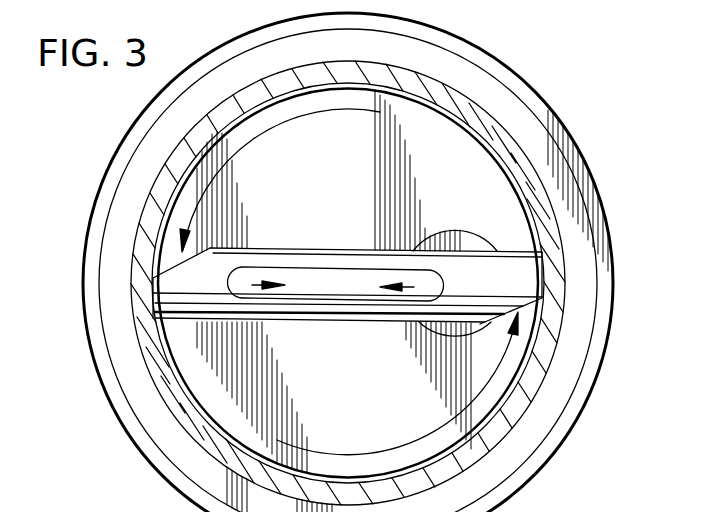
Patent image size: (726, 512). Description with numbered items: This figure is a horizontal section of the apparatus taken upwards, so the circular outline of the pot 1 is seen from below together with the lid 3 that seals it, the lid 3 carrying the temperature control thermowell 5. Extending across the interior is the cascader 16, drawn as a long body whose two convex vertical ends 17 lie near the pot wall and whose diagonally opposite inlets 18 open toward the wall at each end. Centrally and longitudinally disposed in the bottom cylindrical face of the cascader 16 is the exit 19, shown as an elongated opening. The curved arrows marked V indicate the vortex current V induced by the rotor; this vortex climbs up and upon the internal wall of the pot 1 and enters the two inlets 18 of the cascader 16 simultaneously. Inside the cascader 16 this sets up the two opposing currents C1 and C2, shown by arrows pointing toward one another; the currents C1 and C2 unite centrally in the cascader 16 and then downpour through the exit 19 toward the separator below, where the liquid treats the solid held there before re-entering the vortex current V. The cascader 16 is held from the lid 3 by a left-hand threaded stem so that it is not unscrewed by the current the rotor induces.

The pot 1 is at (532, 182).
The lid 3 is at (194, 182).
The temperature control thermowell 5 is at (436, 243).
The cascader 16 is at (180, 320).
The convex vertical ends 17 is at (151, 297).
The inlets 18 is at (158, 262).
The exit 19 is at (323, 270).
The current C1 is at (250, 286).
The current C2 is at (412, 287).
The vortex current V is at (217, 183).